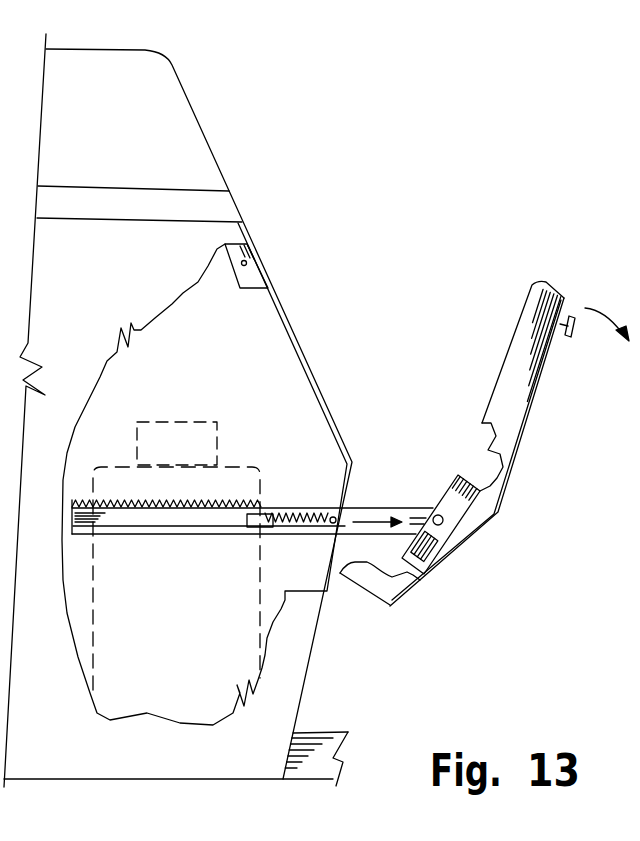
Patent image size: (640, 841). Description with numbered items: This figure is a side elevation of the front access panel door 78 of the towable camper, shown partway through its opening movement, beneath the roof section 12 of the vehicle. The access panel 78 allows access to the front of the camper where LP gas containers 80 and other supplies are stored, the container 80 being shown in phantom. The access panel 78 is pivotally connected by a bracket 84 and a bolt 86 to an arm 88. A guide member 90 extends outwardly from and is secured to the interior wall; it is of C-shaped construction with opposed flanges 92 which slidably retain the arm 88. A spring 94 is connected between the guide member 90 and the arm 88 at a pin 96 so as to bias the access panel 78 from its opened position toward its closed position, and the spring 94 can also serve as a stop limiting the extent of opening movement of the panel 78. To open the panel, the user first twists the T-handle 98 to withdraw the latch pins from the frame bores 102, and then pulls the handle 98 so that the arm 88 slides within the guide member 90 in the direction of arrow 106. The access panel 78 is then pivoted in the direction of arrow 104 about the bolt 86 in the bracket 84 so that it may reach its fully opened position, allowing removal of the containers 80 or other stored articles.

The roof section 12 is at (190, 130).
The frame bore 102 is at (252, 254).
The LP gas container 80 is at (174, 423).
The guide member 90 is at (205, 537).
The spring 94 is at (160, 512).
The flange 92 is at (277, 505).
The pin 96 is at (336, 518).
The arm 88 is at (293, 530).
The arrow 106 is at (390, 517).
The bracket 84 is at (460, 507).
The bolt 86 is at (443, 524).
The front access panel door 78 is at (535, 383).
The T-handle 98 is at (574, 330).
The arrow 104 is at (607, 312).